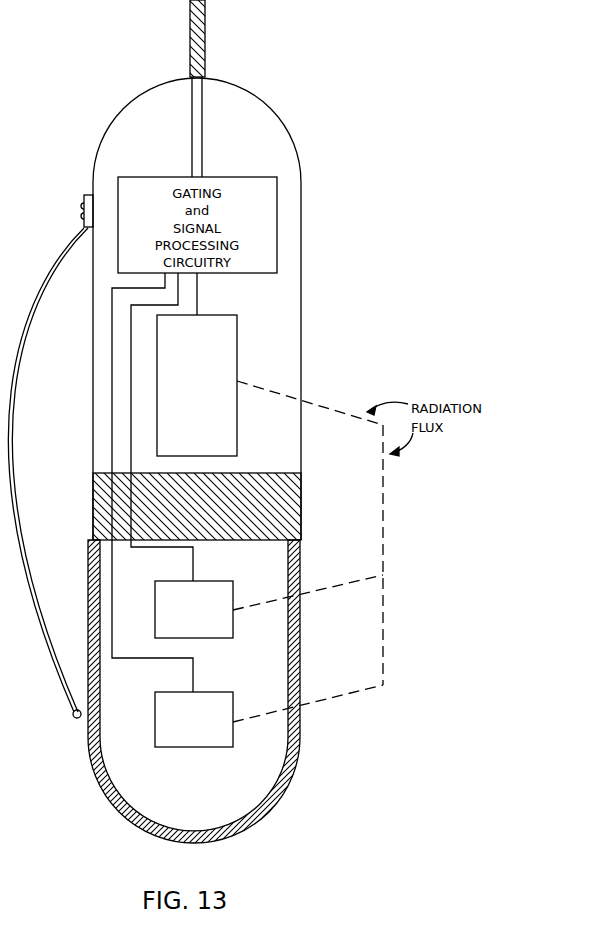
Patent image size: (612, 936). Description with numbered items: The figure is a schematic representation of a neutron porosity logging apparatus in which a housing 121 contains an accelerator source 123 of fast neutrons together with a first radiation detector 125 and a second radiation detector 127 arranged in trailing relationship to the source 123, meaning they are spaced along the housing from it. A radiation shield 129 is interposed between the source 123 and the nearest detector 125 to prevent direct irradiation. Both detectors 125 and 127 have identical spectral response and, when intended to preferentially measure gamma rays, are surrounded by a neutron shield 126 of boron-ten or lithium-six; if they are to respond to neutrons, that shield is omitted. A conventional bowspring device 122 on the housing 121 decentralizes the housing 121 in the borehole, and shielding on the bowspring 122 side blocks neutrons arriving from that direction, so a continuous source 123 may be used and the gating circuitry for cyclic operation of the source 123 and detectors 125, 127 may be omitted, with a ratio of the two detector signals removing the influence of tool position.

The housing 121 is at (97, 151).
The bowspring device 122 is at (24, 362).
The accelerator source 123 is at (237, 337).
The first radiation detector 125 is at (170, 581).
The neutron shield 126 is at (88, 600).
The second radiation detector 127 is at (170, 692).
The radiation shield 129 is at (93, 495).